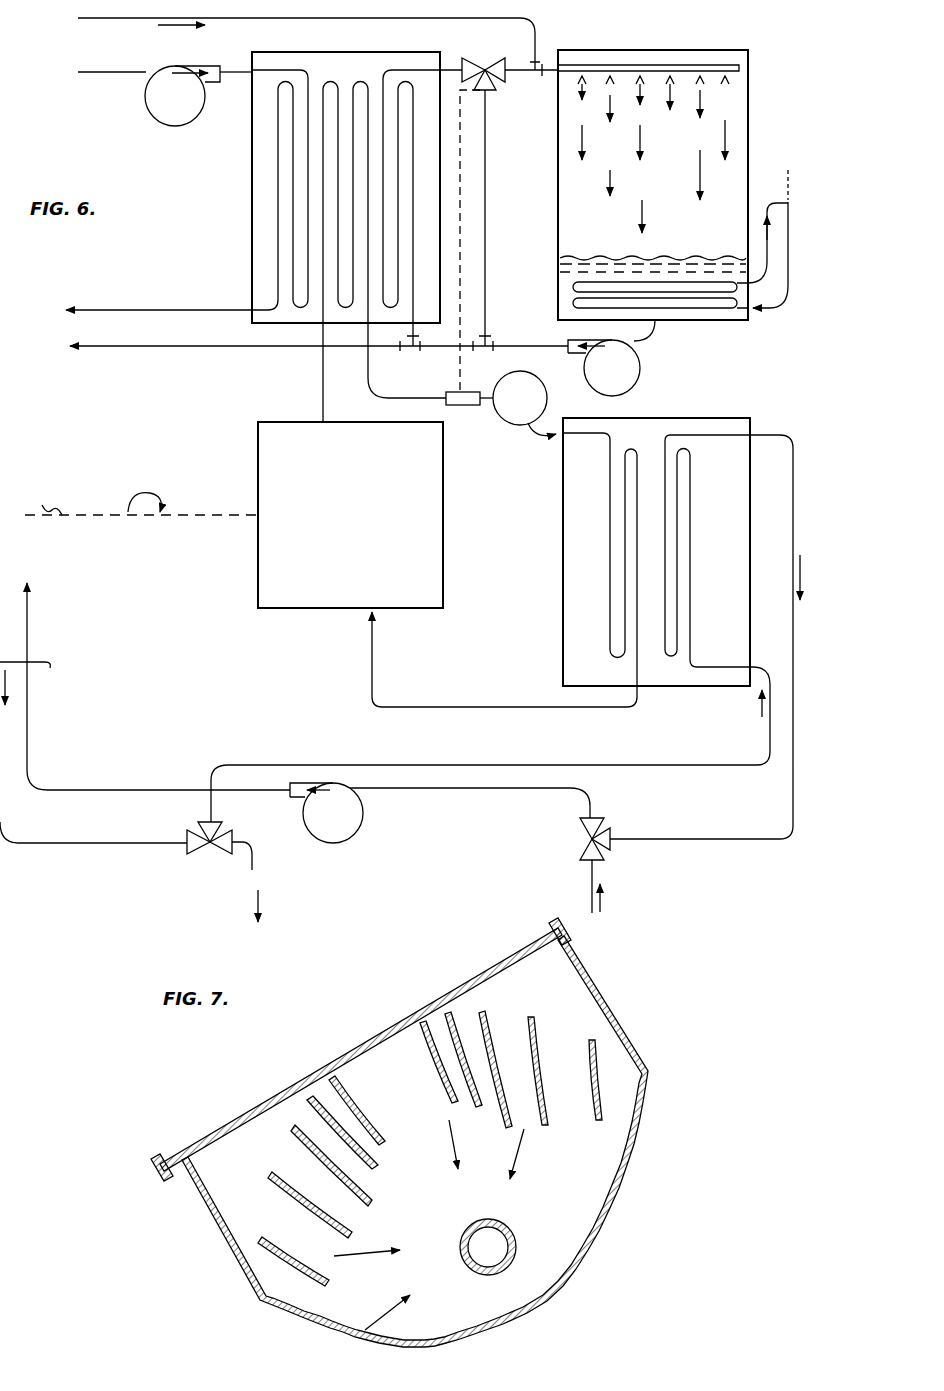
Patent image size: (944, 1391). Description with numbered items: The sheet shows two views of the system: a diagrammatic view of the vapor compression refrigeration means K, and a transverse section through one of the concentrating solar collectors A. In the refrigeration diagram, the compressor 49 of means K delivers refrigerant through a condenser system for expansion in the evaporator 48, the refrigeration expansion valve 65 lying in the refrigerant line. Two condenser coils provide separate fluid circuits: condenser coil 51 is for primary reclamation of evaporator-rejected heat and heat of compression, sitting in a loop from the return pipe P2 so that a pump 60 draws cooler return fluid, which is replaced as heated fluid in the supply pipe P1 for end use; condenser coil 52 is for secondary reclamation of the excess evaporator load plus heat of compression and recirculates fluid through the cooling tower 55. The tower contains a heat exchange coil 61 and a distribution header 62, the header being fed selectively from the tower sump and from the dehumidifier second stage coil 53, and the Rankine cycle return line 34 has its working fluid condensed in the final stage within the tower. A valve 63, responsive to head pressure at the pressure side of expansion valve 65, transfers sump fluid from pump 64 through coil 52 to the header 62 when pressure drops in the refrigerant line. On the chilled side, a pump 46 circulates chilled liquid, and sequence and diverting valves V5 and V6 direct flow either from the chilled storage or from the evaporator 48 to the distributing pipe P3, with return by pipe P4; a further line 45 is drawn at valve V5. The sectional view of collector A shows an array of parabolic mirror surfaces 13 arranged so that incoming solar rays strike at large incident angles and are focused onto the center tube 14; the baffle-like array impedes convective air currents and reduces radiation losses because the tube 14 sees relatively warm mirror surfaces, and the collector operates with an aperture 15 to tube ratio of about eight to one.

In FIG. 6, the dehumidifier second stage coil 53 is at (303, 185).
In FIG. 6, the return pipe P2 is at (95, 76).
In FIG. 6, the pump 60 is at (175, 127).
In FIG. 6, the condenser coil 51 is at (280, 228).
In FIG. 6, the supply pipe P1 is at (108, 308).
In FIG. 6, the condenser coil 52 is at (412, 246).
In FIG. 6, the valve 63 is at (489, 66).
In FIG. 6, the cooling tower 55 is at (683, 50).
In FIG. 6, the distribution header 62 is at (716, 76).
In FIG. 6, the Rankine cycle return line 34 is at (785, 239).
In FIG. 6, the coil 61 is at (708, 309).
In FIG. 6, the pump 64 is at (611, 358).
In FIG. 6, the refrigeration expansion valve 65 is at (501, 403).
In FIG. 6, the compressor 49 is at (350, 515).
In FIG. 6, the vapor compression refrigeration means K is at (305, 618).
In FIG. 6, the evaporator 48 is at (733, 418).
In FIG. 6, the distributing pipe P3 is at (30, 632).
In FIG. 6, the return pipe P4 is at (38, 683).
In FIG. 6, the pump 46 is at (440, 813).
In FIG. 6, the sequence and diverting valve V5 is at (601, 835).
In FIG. 6, the conduit 45 is at (598, 877).
In FIG. 6, the sequence and diverting valve V6 is at (205, 855).
In FIG. 7, the concentrating collector A is at (237, 1058).
In FIG. 7, the aperture 15 is at (390, 1018).
In FIG. 7, the parabolic mirror surfaces 13 is at (528, 1020).
In FIG. 7, the center tube 14 is at (584, 1221).